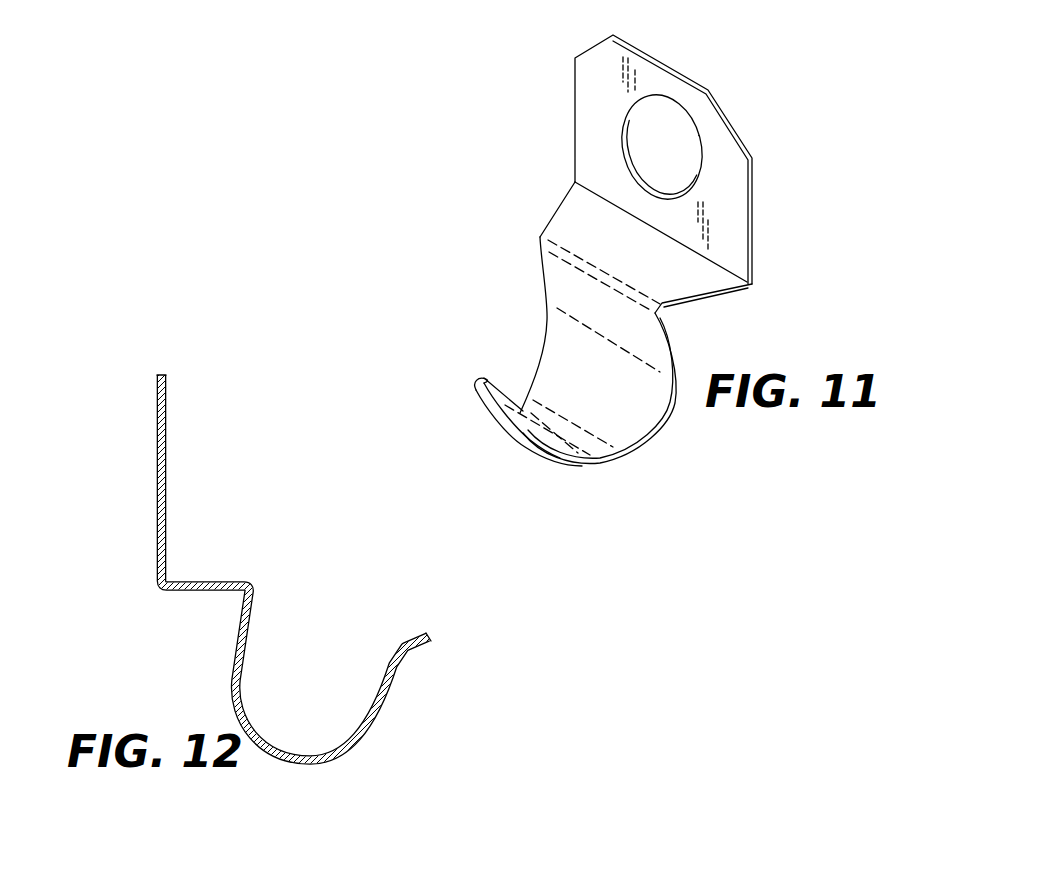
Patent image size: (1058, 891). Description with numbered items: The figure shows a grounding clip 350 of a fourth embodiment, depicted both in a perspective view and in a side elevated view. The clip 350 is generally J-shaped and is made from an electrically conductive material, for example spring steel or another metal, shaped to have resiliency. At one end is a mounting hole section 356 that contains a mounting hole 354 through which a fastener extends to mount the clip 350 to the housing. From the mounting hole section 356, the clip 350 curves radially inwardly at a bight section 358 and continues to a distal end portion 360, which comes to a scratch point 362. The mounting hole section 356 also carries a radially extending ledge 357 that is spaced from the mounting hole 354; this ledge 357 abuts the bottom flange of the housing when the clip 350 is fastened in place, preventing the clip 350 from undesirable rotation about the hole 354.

In FIG. 11, the clip 350 is at (783, 122).
In FIG. 12, the clip 350 is at (287, 573).
In FIG. 11, the mounting hole 354 is at (638, 128).
In FIG. 12, the mounting hole 354 is at (158, 447).
In FIG. 11, the mounting hole section 356 is at (727, 197).
In FIG. 12, the mounting hole section 356 is at (165, 550).
In FIG. 11, the radially extending ledge 357 is at (727, 288).
In FIG. 12, the radially extending ledge 357 is at (207, 592).
In FIG. 11, the bight section 358 is at (632, 445).
In FIG. 12, the bight section 358 is at (323, 767).
In FIG. 11, the distal end portion 360 is at (488, 415).
In FIG. 12, the distal end portion 360 is at (387, 713).
In FIG. 11, the scratch point 362 is at (475, 388).
In FIG. 12, the scratch point 362 is at (433, 640).